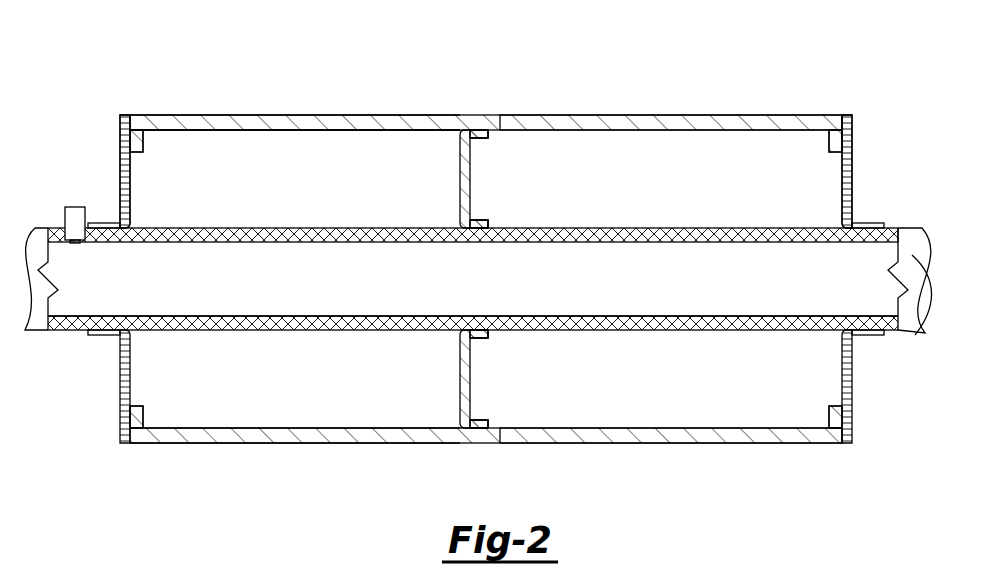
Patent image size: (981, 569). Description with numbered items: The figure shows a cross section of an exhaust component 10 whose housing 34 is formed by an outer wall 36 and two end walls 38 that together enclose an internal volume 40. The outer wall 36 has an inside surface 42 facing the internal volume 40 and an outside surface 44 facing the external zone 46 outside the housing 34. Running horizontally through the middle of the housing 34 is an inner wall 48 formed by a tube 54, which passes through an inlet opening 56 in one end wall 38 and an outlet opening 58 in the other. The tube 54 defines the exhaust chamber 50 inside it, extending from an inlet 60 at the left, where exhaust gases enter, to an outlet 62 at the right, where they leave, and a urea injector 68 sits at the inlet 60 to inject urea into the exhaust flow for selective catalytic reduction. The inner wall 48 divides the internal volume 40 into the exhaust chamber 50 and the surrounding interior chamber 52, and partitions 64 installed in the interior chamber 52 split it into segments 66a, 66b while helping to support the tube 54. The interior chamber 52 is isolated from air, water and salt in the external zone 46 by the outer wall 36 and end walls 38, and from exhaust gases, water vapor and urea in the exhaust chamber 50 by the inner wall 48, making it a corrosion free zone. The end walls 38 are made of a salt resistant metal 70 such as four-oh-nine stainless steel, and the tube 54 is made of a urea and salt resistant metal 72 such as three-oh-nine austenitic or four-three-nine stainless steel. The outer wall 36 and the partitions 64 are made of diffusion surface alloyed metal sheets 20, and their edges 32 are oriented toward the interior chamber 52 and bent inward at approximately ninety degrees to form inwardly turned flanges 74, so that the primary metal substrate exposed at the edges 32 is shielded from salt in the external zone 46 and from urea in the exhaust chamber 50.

The exhaust component 10 is at (118, 106).
The diffusion surface alloyed metal sheet 20 is at (668, 120).
The edges 32 is at (136, 155).
The housing 34 is at (856, 185).
The outer wall 36 is at (567, 113).
The end walls 38 is at (118, 378).
The internal volume 40 is at (240, 158).
The inside surface 42 is at (315, 133).
The outside surface 44 is at (316, 113).
The external zone 46 is at (181, 510).
The inner wall 48 is at (606, 235).
The exhaust chamber 50 is at (645, 286).
The interior chamber 52 is at (243, 386).
The tube 54 is at (900, 244).
The inlet opening 56 is at (118, 322).
The outlet opening 58 is at (862, 328).
The inlet 60 is at (30, 310).
The outlet 62 is at (905, 320).
The partitions 64 is at (474, 190).
The segment 66a is at (300, 191).
The segment 66b is at (728, 183).
The urea injector 68 is at (72, 212).
The salt resistant metal 70 is at (128, 124).
The urea and salt resistant metal 72 is at (262, 319).
The inwardly turned flanges 74 is at (137, 141).